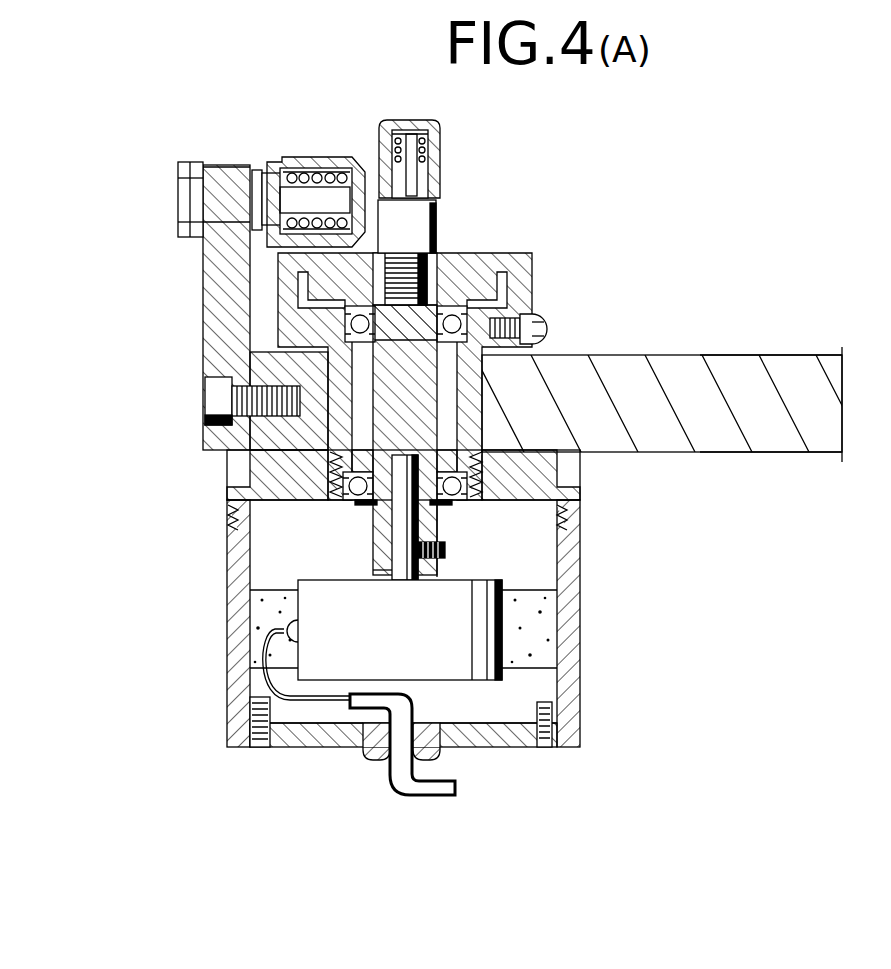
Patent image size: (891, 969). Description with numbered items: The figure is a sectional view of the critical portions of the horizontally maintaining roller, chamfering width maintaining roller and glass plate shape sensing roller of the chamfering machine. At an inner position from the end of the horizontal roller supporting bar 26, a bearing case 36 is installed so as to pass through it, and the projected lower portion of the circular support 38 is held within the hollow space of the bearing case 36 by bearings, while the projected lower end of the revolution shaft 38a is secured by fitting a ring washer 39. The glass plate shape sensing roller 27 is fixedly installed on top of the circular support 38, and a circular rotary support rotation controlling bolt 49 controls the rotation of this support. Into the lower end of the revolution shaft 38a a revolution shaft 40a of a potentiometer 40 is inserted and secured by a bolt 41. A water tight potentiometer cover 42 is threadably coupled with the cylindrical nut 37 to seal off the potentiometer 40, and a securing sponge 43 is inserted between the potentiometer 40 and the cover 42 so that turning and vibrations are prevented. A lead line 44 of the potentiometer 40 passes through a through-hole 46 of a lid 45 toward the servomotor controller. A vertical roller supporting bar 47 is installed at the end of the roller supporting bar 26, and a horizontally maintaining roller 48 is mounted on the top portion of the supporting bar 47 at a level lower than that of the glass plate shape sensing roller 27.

The roller supporting bar 26 is at (772, 355).
The glass plate shape sensing roller 27 is at (440, 152).
The bearing case 36 is at (473, 403).
The cylindrical nut 37 is at (583, 478).
The circular support 38 is at (530, 275).
The revolution shaft 38a is at (375, 553).
The ring washer 39 is at (373, 503).
The potentiometer 40 is at (483, 645).
The revolution shaft of potentiometer 40a is at (443, 530).
The bolt 41 is at (441, 556).
The water tight potentiometer cover 42 is at (582, 564).
The securing sponge 43 is at (545, 663).
The lead line 44 is at (325, 695).
The lid 45 is at (507, 752).
The through-hole 46 is at (385, 755).
The roller supporting bar 47 is at (212, 300).
The horizontally maintaining roller 48 is at (320, 157).
The circular rotary support rotation controlling bolt 49 is at (546, 323).